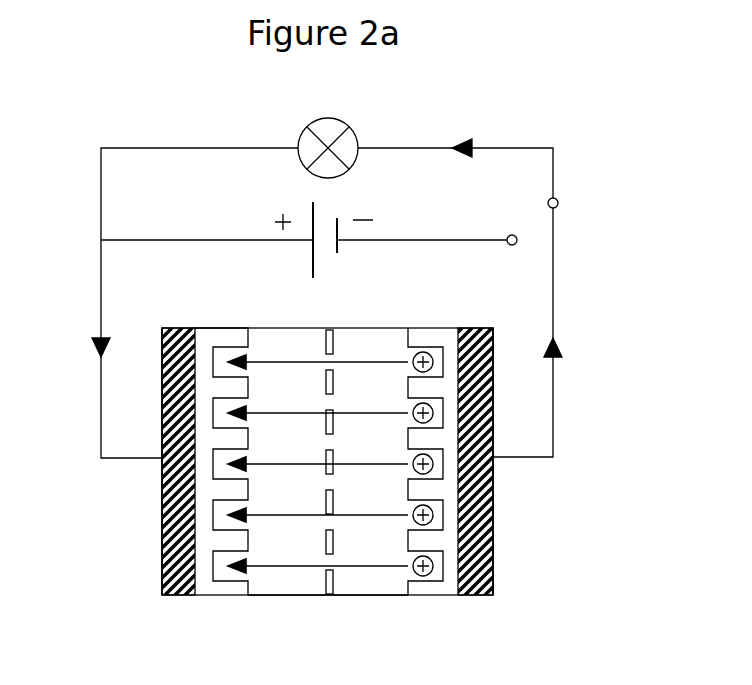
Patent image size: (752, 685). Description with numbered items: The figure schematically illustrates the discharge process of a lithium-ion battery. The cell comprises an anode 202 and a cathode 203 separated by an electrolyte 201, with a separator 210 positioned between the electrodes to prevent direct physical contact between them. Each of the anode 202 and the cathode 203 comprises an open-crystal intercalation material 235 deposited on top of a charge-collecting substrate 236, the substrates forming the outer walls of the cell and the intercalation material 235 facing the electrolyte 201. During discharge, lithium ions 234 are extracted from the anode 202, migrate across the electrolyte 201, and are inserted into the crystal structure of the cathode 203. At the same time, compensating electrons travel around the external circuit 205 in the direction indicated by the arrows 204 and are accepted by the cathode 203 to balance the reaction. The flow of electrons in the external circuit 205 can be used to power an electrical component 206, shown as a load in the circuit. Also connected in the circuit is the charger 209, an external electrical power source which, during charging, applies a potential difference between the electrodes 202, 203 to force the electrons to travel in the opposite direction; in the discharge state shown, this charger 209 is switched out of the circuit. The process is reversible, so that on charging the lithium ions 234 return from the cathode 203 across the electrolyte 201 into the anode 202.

The electrolyte 201 is at (285, 578).
The anode 202 is at (515, 605).
The cathode 203 is at (143, 612).
The arrows 204 is at (465, 142).
The external circuit 205 is at (158, 148).
The electrical component 206 is at (310, 143).
The charger 209 is at (358, 255).
The separator 210 is at (330, 592).
The lithium ions 234 is at (423, 574).
The open-crystal intercalation material 235 is at (212, 490).
The charge-collecting substrate 236 is at (178, 542).